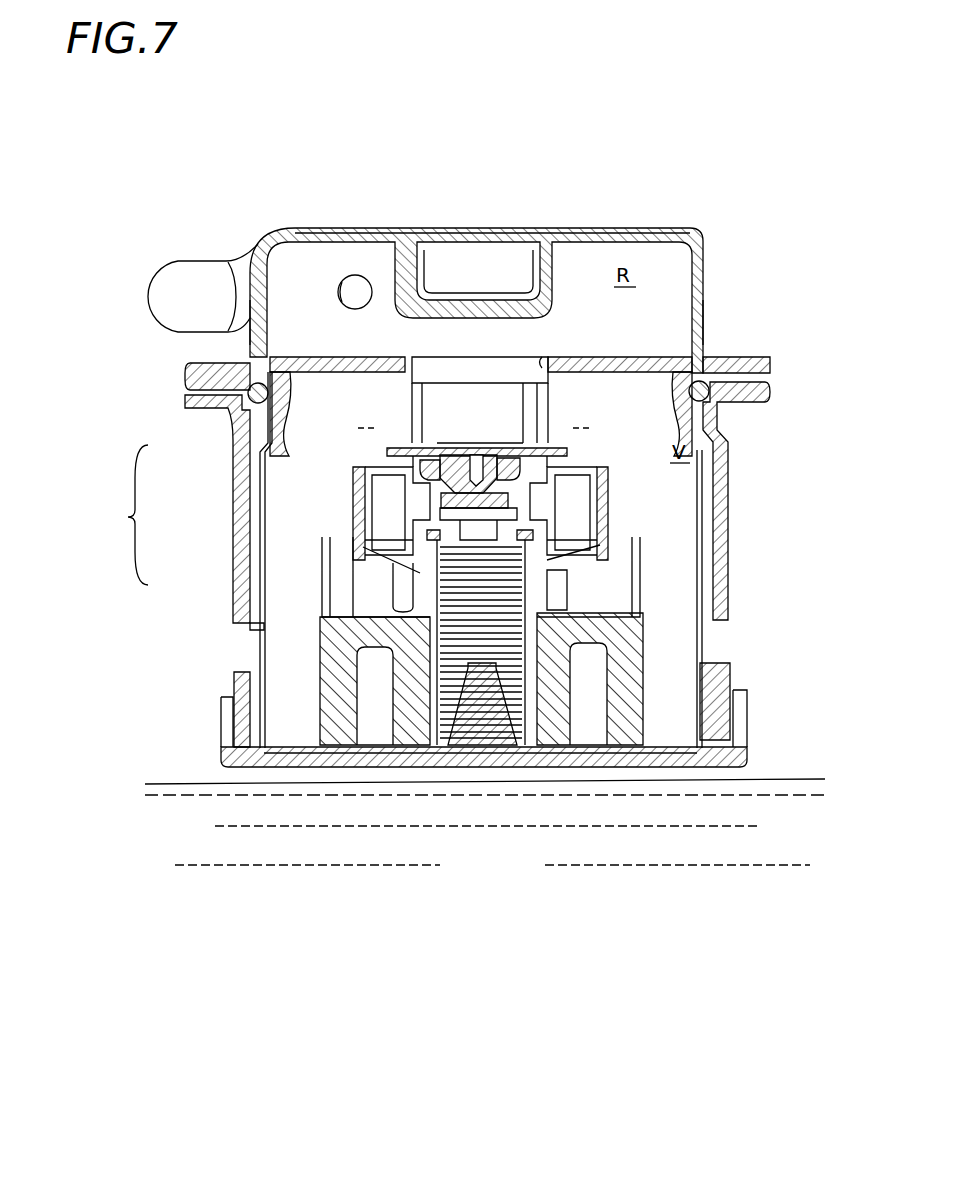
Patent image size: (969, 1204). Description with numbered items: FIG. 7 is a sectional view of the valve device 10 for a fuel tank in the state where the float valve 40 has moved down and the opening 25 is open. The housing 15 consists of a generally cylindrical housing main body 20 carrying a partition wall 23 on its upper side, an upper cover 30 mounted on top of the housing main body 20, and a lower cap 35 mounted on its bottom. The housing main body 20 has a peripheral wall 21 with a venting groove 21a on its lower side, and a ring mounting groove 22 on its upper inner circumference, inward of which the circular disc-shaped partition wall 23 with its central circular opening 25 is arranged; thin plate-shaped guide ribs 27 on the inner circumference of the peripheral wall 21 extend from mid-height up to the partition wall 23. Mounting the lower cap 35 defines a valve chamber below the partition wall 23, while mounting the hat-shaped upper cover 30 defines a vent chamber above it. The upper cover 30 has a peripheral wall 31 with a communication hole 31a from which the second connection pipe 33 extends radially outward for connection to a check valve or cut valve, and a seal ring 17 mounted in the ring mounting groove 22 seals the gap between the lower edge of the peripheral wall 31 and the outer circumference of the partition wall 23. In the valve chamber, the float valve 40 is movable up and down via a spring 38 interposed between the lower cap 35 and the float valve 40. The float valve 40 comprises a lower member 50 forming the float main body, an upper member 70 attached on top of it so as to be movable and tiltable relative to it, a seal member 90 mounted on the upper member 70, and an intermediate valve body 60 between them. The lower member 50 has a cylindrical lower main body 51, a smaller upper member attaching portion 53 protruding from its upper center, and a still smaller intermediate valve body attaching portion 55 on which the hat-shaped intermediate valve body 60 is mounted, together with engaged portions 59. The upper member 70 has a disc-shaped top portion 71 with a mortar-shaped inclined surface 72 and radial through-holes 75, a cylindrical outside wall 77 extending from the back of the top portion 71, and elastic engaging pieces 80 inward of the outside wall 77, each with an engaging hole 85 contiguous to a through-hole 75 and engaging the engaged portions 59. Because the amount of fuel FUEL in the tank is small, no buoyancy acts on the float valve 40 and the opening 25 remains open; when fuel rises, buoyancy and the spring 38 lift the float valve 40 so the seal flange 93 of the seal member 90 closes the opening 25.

The valve device 10 is at (440, 222).
The housing 15 is at (125, 515).
The seal ring 17 is at (704, 385).
The housing main body 20 is at (228, 518).
The peripheral wall 21 is at (720, 445).
The venting groove 21a is at (246, 629).
The ring mounting groove 22 is at (720, 400).
The partition wall 23 is at (628, 365).
The opening 25 is at (534, 360).
The guide ribs 27 is at (610, 497).
The upper cover 30 is at (183, 381).
The peripheral wall 31 is at (702, 290).
The communication hole 31a is at (358, 280).
The second connection pipe 33 is at (206, 272).
The lower cap 35 is at (213, 746).
The spring 38 is at (508, 745).
The float valve 40 is at (347, 469).
The lower member 50 is at (650, 652).
The lower main body 51 is at (632, 703).
The upper member attaching portion 53 is at (557, 582).
The intermediate valve body attaching portion 55 is at (437, 517).
The engaged portions 59 is at (403, 577).
The intermediate valve body 60 is at (520, 497).
The upper member 70 is at (617, 505).
The top portion 71 is at (388, 470).
The inclined surface 72 is at (575, 458).
The through-holes 75 is at (397, 480).
The outside wall 77 is at (598, 523).
The elastic engaging pieces 80 is at (387, 563).
The engaging hole 85 is at (400, 533).
The seal member 90 is at (456, 443).
The seal flange 93 is at (407, 435).
The fuel level FUEL is at (800, 778).